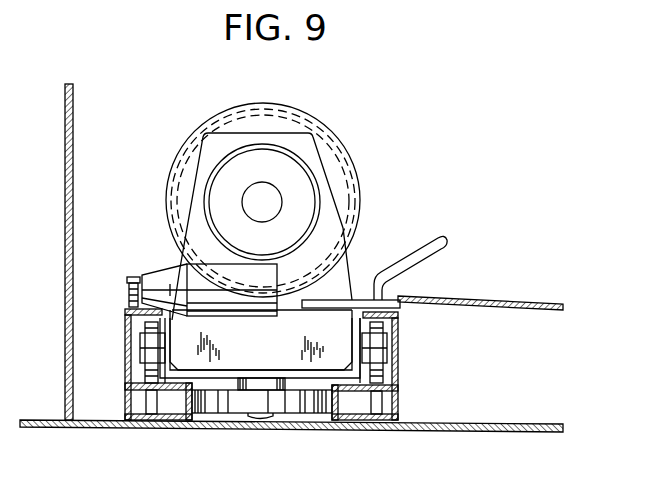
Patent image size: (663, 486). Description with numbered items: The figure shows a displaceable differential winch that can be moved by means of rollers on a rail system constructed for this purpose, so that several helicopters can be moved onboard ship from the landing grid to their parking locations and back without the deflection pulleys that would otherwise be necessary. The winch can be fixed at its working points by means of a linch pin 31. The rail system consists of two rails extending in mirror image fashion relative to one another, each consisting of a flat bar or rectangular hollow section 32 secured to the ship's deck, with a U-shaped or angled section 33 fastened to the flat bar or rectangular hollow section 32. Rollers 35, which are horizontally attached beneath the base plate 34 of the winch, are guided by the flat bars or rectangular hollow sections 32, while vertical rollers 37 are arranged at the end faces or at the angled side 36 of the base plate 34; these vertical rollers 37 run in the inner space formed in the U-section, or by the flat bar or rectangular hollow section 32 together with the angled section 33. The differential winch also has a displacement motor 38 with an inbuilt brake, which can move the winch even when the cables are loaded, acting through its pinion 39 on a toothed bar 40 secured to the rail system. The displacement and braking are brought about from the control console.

The linch pin 31 is at (418, 255).
The flat bar or rectangular hollow section 32 is at (126, 400).
The U-shaped or angled section 33 is at (125, 362).
The base plate 34 is at (294, 378).
The rollers 35 is at (232, 402).
The angled side 36 is at (165, 330).
The vertical rollers 37 is at (150, 395).
The displacement motor 38 is at (243, 304).
The pinion 39 is at (128, 278).
The toothed bar 40 is at (128, 305).